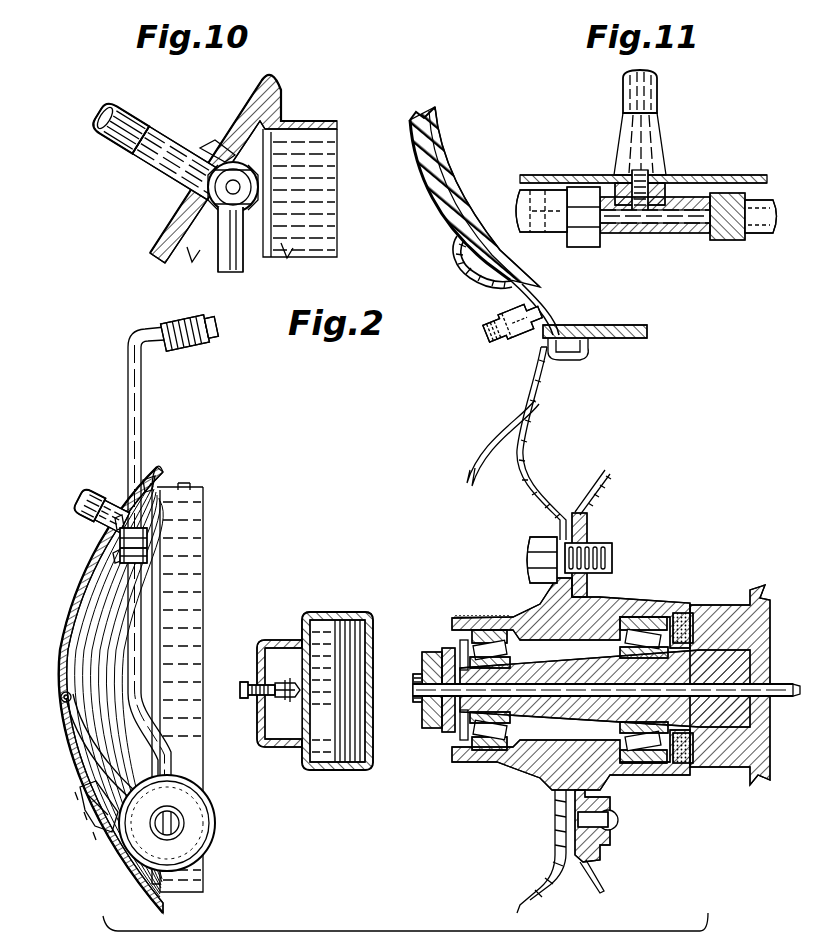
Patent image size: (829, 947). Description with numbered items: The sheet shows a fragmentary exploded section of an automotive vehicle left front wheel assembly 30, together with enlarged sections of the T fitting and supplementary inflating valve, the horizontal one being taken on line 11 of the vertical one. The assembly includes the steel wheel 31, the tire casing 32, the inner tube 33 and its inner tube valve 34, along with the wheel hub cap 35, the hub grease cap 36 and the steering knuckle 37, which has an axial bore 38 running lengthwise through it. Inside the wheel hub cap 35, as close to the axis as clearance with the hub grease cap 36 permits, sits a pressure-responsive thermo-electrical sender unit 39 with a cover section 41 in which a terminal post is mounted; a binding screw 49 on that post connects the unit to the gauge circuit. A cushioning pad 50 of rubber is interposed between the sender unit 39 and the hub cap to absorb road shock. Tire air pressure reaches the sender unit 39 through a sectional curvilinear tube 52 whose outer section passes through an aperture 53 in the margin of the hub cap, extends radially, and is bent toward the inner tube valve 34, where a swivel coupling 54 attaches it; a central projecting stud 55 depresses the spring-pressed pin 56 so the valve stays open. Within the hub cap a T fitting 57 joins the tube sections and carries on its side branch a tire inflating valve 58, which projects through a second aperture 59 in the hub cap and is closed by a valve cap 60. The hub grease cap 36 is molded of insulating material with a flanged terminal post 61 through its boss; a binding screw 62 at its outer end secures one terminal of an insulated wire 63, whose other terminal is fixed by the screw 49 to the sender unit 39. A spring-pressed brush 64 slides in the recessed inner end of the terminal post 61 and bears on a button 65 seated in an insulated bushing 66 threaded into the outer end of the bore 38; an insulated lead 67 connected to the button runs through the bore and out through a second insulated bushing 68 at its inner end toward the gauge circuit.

In FIG. 10, the section line 11 is at (97, 110).
In FIG. 2, the automotive vehicle left front wheel assembly 30 is at (217, 876).
In FIG. 2, the steel wheel 31 is at (527, 484).
In FIG. 2, the tire casing 32 is at (433, 193).
In FIG. 2, the inner tube 33 is at (445, 152).
In FIG. 2, the inner tube valve 34 is at (512, 333).
In FIG. 10, the wheel hub cap 35 is at (160, 243).
In FIG. 11, the wheel hub cap 35 is at (706, 175).
In FIG. 2, the wheel hub cap 35 is at (70, 582).
In FIG. 2, the hub grease cap 36 is at (320, 612).
In FIG. 2, the steering knuckle 37 is at (558, 665).
In FIG. 2, the axial bore 38 is at (549, 698).
In FIG. 2, the thermo-electrical control or sender unit 39 is at (212, 845).
In FIG. 2, the cover section 41 is at (192, 828).
In FIG. 2, the binding or clamping screw 49 is at (172, 822).
In FIG. 2, the shock absorbing or insulating block or pad 50 is at (90, 806).
In FIG. 10, the tire air pressure conducting tube or pipe 52 is at (244, 255).
In FIG. 11, the tire air pressure conducting tube or pipe 52 is at (530, 200).
In FIG. 2, the tire air pressure conducting tube or pipe 52 is at (128, 410).
In FIG. 2, the aperture 53 is at (148, 480).
In FIG. 2, the swivel coupling 54 is at (186, 346).
In FIG. 2, the central projecting stud 55 is at (185, 318).
In FIG. 2, the spring-pressed pin 56 is at (482, 326).
In FIG. 10, the T fitting 57 is at (246, 186).
In FIG. 11, the T fitting 57 is at (650, 234).
In FIG. 2, the T fitting 57 is at (145, 546).
In FIG. 10, the tire inflating valve 58 is at (155, 162).
In FIG. 11, the tire inflating valve 58 is at (628, 140).
In FIG. 2, the tire inflating valve 58 is at (107, 500).
In FIG. 10, the aperture 59 is at (212, 142).
In FIG. 11, the aperture 59 is at (661, 178).
In FIG. 2, the aperture 59 is at (116, 553).
In FIG. 10, the valve cap 60 is at (133, 112).
In FIG. 11, the valve cap 60 is at (656, 95).
In FIG. 2, the valve cap 60 is at (78, 492).
In FIG. 2, the terminal post 61 is at (294, 688).
In FIG. 2, the binding or clamping screw 62 is at (246, 700).
In FIG. 2, the insulated conductor or wire 63 is at (82, 766).
In FIG. 2, the spring-pressed brush 64 is at (296, 698).
In FIG. 2, the button 65 is at (412, 706).
In FIG. 2, the insulated bushing 66 is at (424, 680).
In FIG. 2, the insulated conductor or lead 67 is at (588, 706).
In FIG. 2, the insulated bushing 68 is at (748, 700).